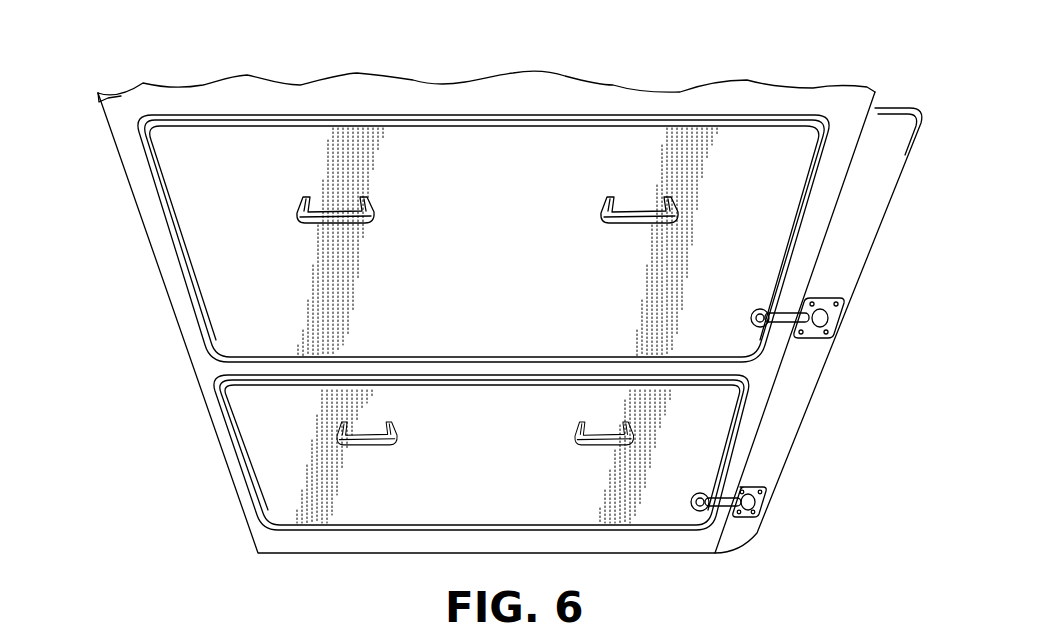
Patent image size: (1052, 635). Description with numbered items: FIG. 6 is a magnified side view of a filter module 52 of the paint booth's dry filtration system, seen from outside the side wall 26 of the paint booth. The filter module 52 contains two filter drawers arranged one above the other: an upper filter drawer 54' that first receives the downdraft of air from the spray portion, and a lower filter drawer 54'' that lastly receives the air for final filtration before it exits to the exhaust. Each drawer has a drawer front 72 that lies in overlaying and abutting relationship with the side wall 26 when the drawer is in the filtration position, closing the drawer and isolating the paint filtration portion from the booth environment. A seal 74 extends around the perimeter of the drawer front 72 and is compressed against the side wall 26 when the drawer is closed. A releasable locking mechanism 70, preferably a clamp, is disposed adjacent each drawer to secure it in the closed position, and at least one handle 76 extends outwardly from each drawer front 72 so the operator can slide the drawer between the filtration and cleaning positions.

The side wall 26 is at (120, 113).
The filter module 52 is at (878, 99).
The upper filter drawer 54' is at (458, 238).
The lower filter drawer 54'' is at (428, 452).
The releasable locking mechanism 70 is at (832, 297).
The drawer front 72 is at (243, 307).
The seal 74 is at (213, 115).
The handle 76 is at (320, 208).